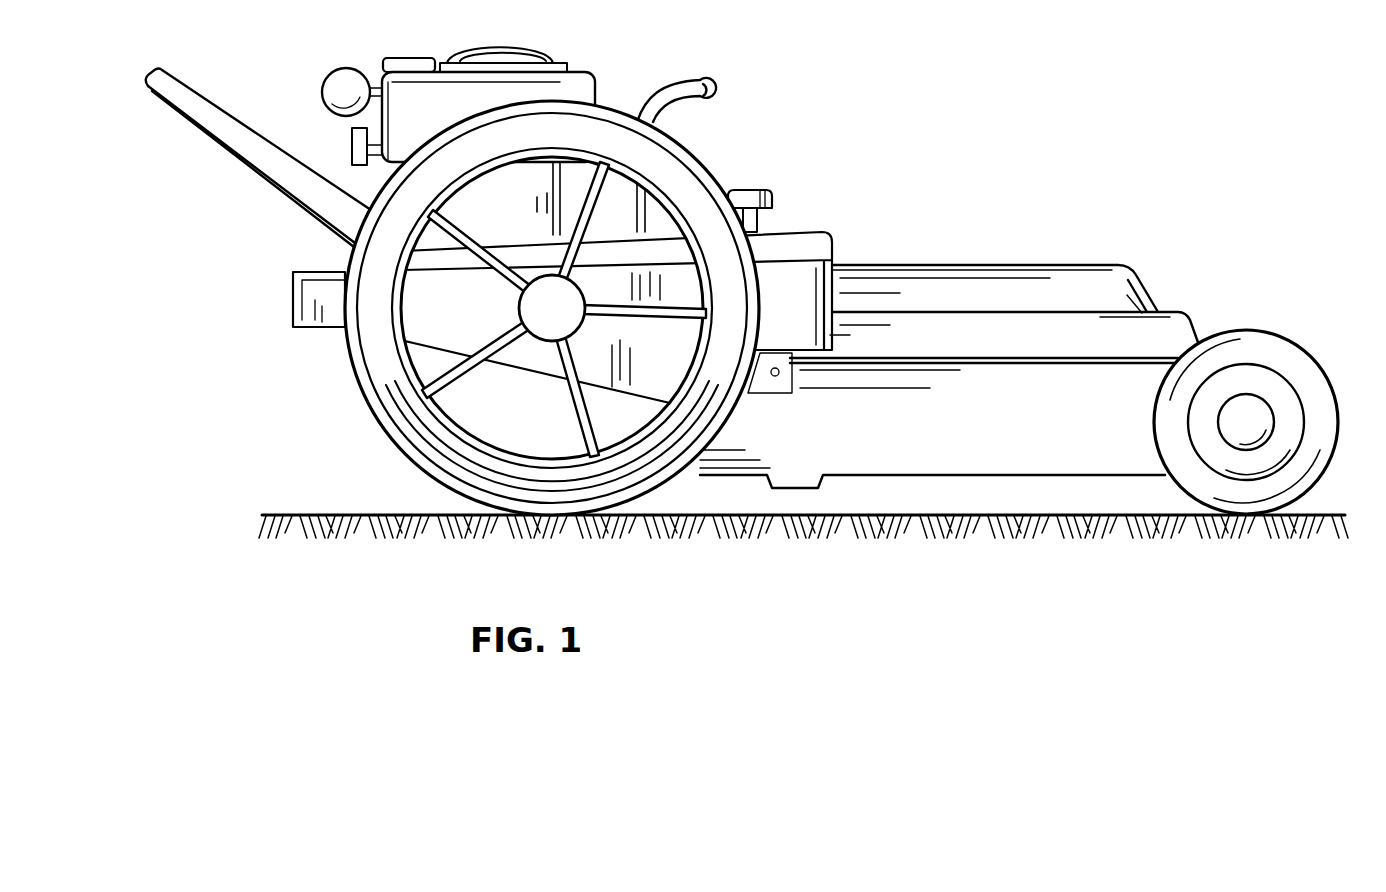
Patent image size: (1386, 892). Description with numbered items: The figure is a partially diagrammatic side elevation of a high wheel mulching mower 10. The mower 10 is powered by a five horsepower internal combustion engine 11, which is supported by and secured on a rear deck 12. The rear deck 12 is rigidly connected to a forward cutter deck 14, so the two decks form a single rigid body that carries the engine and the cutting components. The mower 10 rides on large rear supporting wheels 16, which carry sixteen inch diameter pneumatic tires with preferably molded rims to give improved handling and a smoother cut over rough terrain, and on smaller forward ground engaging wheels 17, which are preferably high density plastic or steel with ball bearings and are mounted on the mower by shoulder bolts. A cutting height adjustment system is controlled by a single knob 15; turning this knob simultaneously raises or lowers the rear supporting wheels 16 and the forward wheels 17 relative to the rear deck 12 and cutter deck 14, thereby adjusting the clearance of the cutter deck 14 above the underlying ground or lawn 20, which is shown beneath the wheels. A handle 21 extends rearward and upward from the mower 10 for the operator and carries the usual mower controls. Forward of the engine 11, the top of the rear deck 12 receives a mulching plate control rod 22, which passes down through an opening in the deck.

The mulching mower 10 is at (1080, 250).
The internal combustion engine 11 is at (590, 66).
The rear deck 12 is at (310, 326).
The cutter deck 14 is at (900, 468).
The knob 15 is at (758, 188).
The rear supporting wheels 16 is at (713, 173).
The forward ground engaging wheels 17 is at (1262, 332).
The ground 20 is at (306, 515).
The handle 21 is at (236, 122).
The mulching plate control rod 22 is at (705, 78).